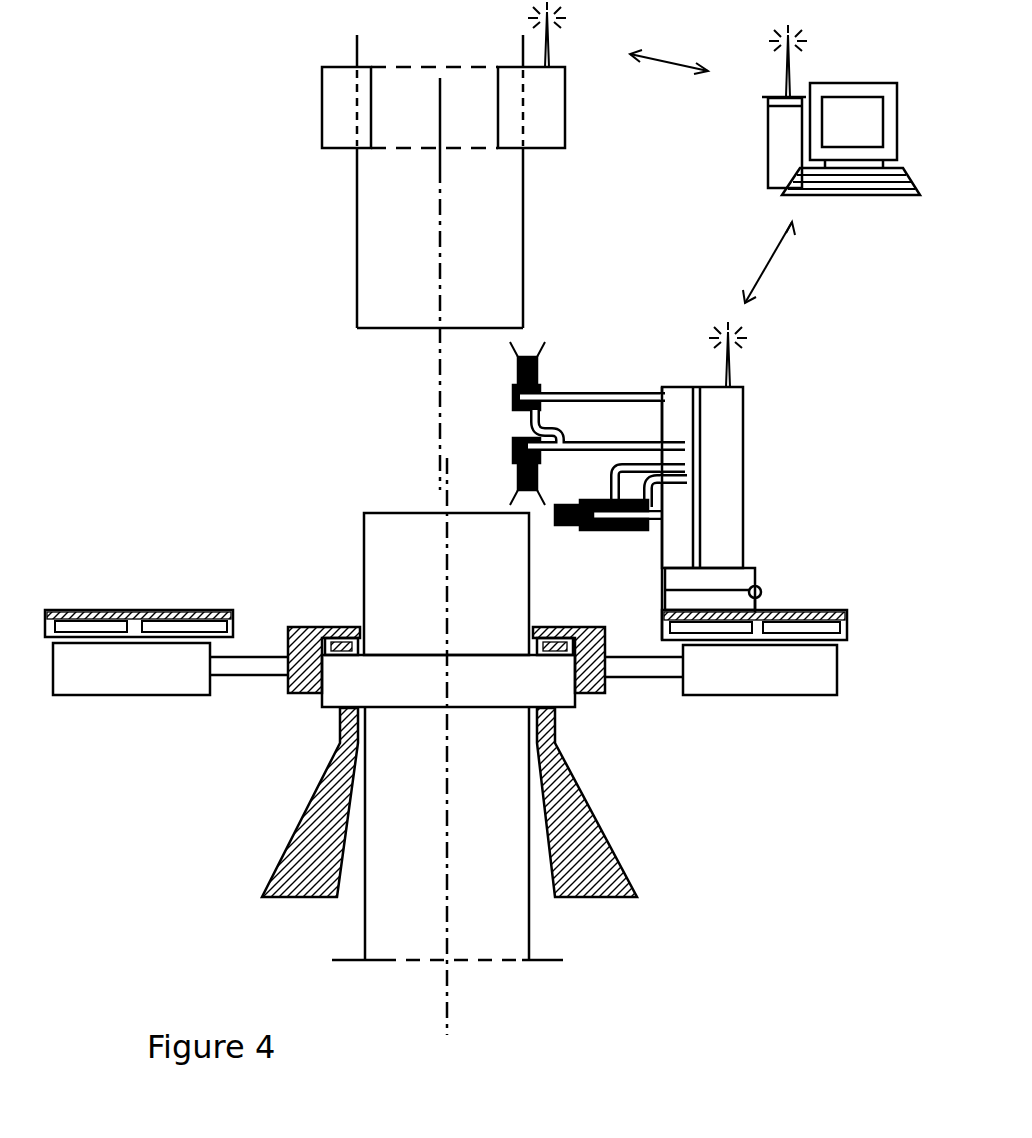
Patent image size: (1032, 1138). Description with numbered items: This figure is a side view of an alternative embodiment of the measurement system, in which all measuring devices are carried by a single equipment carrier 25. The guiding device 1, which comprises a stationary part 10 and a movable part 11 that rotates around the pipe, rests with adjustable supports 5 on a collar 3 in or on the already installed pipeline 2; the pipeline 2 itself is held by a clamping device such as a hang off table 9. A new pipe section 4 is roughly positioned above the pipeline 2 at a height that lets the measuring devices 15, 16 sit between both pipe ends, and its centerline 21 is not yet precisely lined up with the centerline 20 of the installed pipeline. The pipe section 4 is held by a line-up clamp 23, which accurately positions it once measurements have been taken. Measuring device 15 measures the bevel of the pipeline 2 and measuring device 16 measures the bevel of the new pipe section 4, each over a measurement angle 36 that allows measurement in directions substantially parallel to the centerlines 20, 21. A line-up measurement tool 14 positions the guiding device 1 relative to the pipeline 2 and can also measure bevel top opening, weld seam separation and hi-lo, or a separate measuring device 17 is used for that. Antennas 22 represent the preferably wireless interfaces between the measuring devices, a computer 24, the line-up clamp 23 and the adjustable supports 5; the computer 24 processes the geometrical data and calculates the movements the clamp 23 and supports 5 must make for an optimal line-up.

The guiding device 1 is at (770, 745).
The pipeline 2 is at (373, 927).
The collar 3 is at (330, 710).
The new pipe section 4 is at (367, 195).
The supports 5 is at (360, 625).
The hang off table 9 is at (295, 833).
The stationary part 10 is at (157, 683).
The movable part 11 is at (170, 605).
The line-up measurement tool 14 is at (567, 522).
The measuring device 15 is at (518, 480).
The measuring device 16 is at (537, 380).
The separate measuring device 17 is at (613, 533).
The centerline 20 is at (447, 998).
The centerline 21 is at (438, 385).
The antennas 22 is at (733, 370).
The line-up clamp 23 is at (320, 100).
The computer 24 is at (783, 157).
The equipment carrier 25 is at (740, 470).
The measurement angle 36 is at (530, 345).